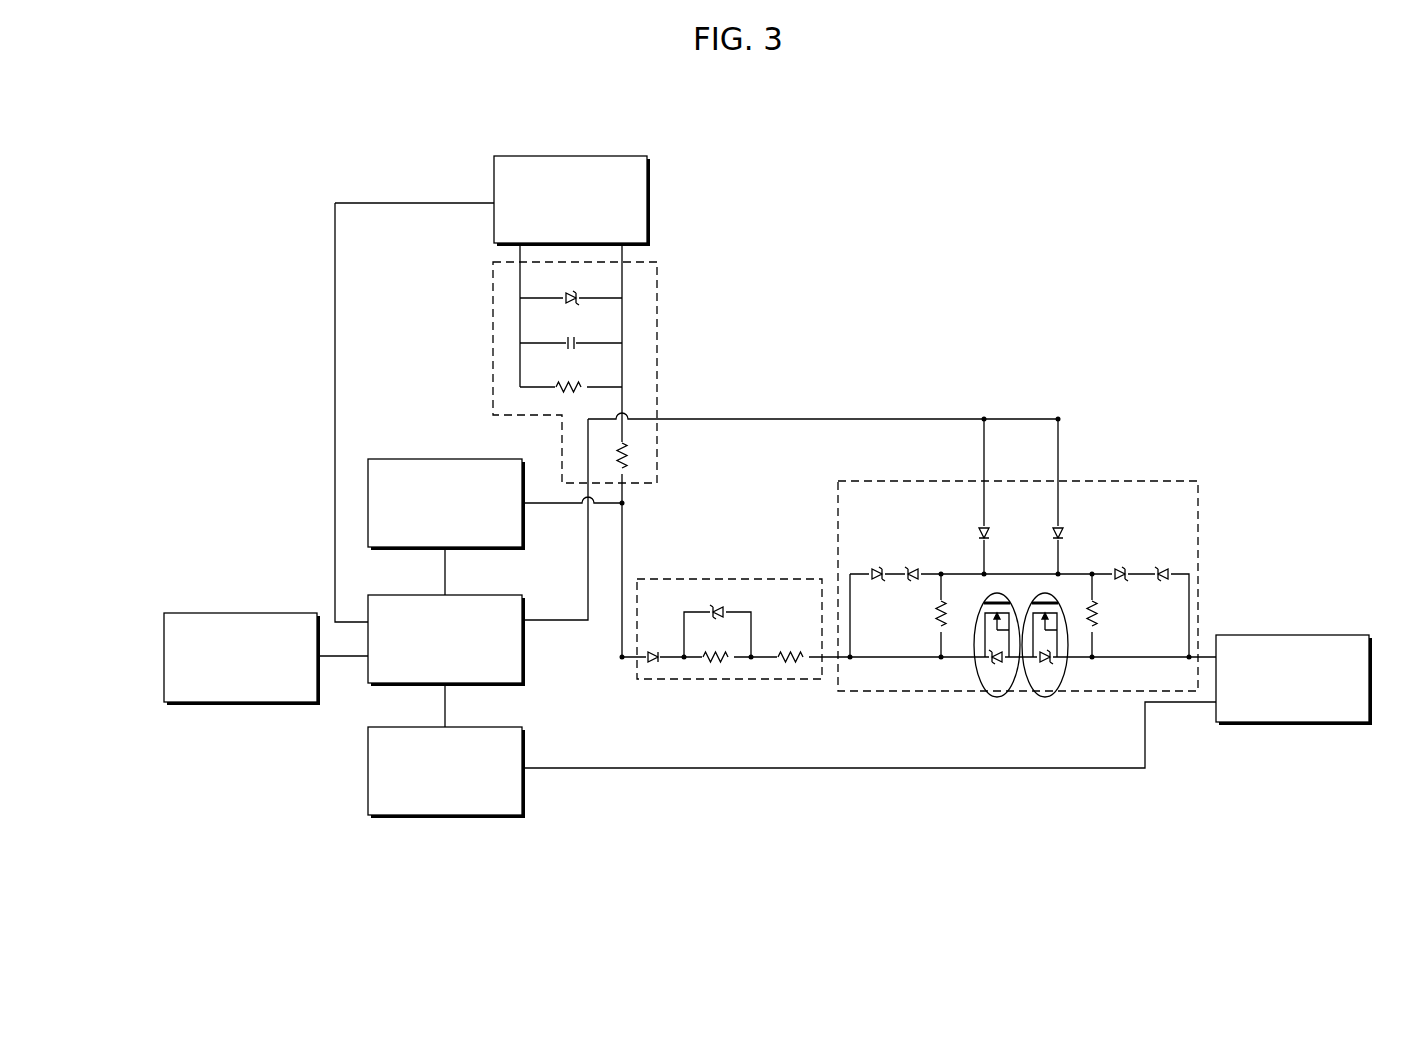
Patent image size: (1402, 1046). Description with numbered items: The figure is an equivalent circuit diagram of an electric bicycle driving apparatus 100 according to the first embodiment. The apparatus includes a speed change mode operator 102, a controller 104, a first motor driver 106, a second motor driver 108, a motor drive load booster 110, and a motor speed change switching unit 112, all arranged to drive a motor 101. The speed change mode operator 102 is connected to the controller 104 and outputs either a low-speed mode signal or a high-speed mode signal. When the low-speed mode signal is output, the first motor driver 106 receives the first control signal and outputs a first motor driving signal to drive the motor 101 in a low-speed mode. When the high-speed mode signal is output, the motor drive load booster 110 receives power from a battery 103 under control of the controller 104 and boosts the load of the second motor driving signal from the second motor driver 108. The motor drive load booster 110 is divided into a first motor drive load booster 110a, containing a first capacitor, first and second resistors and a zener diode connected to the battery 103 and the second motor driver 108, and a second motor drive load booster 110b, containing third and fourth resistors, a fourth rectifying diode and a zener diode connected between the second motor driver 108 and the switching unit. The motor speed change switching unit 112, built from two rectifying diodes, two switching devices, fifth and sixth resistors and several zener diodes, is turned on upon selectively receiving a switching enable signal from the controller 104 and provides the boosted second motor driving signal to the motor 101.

The electric bicycle driving apparatus 100 is at (347, 151).
The motor 101 is at (1297, 722).
The speed change mode operator 102 is at (258, 702).
The battery 103 is at (650, 203).
The controller 104 is at (513, 594).
The first motor driver 106 is at (448, 815).
The second motor driver 108 is at (408, 458).
The motor drive load booster 110 is at (831, 368).
The first motor drive load booster 110a is at (657, 373).
The second motor drive load booster 110b is at (787, 579).
The motor speed change switching unit 112 is at (1152, 481).